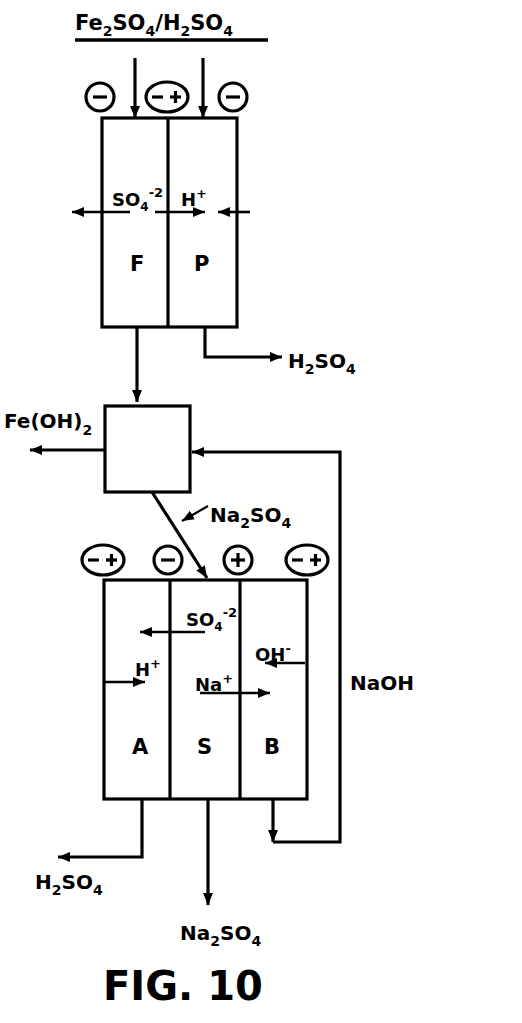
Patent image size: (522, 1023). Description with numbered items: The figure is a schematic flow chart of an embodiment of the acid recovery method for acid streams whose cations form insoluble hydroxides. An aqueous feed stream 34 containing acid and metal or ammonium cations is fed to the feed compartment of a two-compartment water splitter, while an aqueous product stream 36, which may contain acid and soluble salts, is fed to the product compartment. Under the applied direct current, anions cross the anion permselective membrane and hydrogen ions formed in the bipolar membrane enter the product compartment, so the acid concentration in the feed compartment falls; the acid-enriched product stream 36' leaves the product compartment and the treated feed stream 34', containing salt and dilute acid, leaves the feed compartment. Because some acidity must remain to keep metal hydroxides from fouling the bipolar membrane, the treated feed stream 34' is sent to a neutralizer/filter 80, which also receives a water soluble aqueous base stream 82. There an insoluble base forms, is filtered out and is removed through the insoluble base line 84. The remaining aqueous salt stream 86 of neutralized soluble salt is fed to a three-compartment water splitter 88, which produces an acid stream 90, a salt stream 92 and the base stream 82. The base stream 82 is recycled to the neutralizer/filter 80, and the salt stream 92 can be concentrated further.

The aqueous feed stream 34 is at (105, 83).
The aqueous product stream 36 is at (230, 83).
The treated feed stream 34' is at (109, 364).
The product stream 36' is at (251, 329).
The neutralizer/filter 80 is at (193, 418).
The aqueous base stream 82 is at (342, 575).
The insoluble base line 84 is at (90, 452).
The aqueous salt stream 86 is at (165, 518).
The three-compartment water splitter 88 is at (98, 700).
The acid stream 90 is at (130, 858).
The salt stream 92 is at (210, 857).